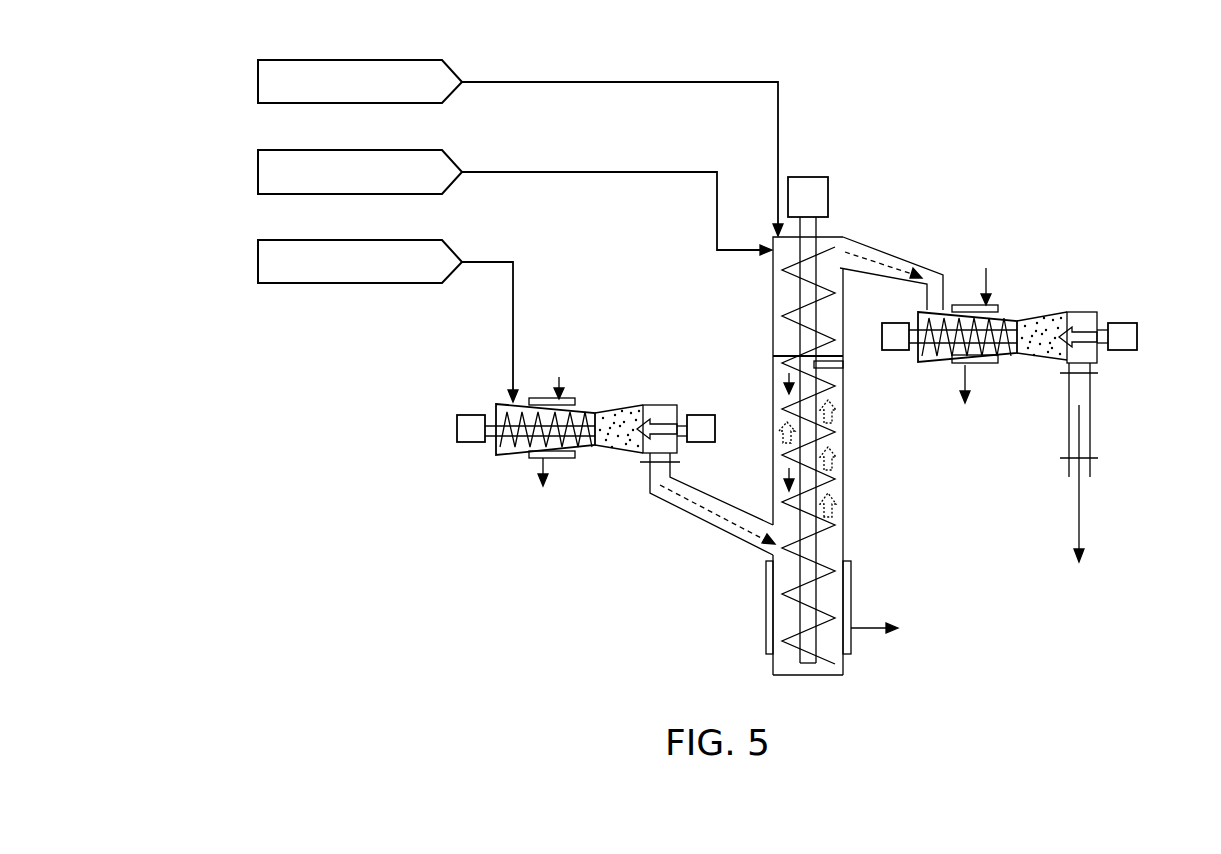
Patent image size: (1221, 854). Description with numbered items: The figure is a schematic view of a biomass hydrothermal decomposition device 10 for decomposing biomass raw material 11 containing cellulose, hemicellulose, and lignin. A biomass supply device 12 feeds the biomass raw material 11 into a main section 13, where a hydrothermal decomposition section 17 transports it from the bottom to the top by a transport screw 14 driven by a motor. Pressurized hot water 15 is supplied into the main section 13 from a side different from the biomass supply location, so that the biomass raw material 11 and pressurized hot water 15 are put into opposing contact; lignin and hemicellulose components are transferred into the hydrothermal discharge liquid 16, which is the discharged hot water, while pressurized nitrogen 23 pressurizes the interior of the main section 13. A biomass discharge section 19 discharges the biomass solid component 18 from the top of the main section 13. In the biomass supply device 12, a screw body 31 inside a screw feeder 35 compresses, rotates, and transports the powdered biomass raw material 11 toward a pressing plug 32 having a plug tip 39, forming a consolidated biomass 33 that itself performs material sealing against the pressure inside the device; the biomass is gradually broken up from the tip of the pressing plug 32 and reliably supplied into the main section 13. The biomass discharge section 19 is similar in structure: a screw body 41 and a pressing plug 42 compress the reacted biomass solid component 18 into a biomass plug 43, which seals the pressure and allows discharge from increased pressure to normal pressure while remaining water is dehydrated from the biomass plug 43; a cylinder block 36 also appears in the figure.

The biomass hydrothermal decomposition device 10 is at (963, 138).
The biomass raw material 11 is at (405, 240).
The biomass supply device 12 is at (478, 394).
The main section 13 is at (772, 386).
The transport screw 14 is at (843, 476).
The pressurized hot water 15 is at (405, 150).
The hydrothermal discharge liquid 16 is at (875, 632).
The hydrothermal decomposition section 17 is at (741, 317).
The biomass solid component 18 is at (897, 254).
The biomass discharge section 19 is at (1118, 292).
The pressurized nitrogen 23 is at (405, 60).
The screw body 31 is at (512, 440).
The pressing plug 32 is at (718, 432).
The consolidated biomass 33 is at (617, 405).
The screw feeder 35 is at (497, 455).
The cylinder block 36 is at (672, 405).
The plug tip 39 is at (657, 405).
The screw body 41 is at (940, 352).
The pressing plug 42 is at (1140, 337).
The biomass plug 43 is at (1040, 310).